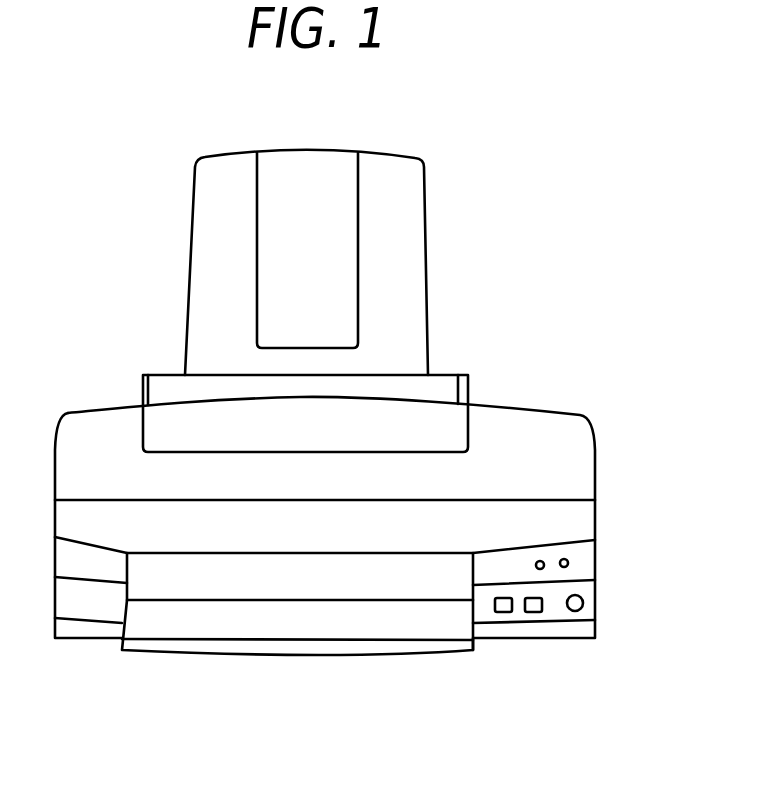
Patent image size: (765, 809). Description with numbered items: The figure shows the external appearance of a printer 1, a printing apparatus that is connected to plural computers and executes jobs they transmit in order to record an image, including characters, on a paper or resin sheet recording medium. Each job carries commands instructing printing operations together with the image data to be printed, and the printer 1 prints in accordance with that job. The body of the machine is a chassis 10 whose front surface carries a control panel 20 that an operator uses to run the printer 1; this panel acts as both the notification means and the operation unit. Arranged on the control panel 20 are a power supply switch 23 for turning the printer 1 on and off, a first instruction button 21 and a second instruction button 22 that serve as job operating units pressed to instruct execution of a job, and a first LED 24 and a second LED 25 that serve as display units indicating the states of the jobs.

The printer 1 is at (591, 231).
The chassis 10 is at (595, 470).
The control panel 20 is at (582, 606).
The first instruction button 21 is at (499, 612).
The second instruction button 22 is at (533, 612).
The power supply switch 23 is at (576, 611).
The first LED 24 is at (568, 563).
The second LED 25 is at (542, 561).